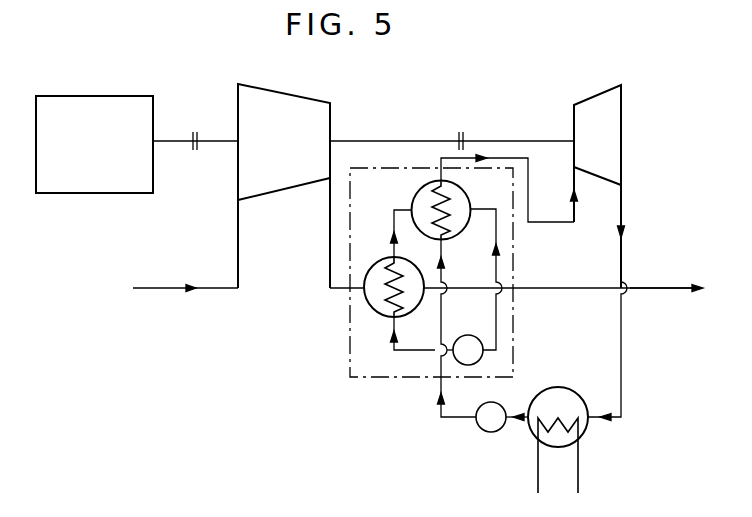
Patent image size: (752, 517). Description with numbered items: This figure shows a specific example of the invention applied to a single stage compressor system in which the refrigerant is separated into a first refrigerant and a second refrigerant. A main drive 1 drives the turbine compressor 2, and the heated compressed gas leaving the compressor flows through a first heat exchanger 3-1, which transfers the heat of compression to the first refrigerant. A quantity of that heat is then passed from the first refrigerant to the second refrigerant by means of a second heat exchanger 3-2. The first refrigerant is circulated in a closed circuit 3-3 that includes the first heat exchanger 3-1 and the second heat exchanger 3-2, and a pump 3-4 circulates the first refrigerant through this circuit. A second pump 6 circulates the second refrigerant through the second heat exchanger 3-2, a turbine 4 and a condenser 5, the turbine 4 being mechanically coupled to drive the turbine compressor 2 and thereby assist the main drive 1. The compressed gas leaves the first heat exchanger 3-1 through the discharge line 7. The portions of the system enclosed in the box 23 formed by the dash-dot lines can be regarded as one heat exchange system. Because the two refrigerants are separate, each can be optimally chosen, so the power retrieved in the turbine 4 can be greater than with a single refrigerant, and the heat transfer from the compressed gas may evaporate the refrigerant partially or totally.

The main drive 1 is at (92, 185).
The turbine compressor 2 is at (284, 189).
The first heat exchanger 3-1 is at (370, 298).
The second heat exchanger 3-2 is at (418, 203).
The closed circuit 3-3 is at (498, 318).
The pump 3-4 is at (483, 362).
The turbine 4 is at (613, 144).
The condenser 5 is at (583, 437).
The second pump 6 is at (489, 432).
The outlet line 7 is at (661, 287).
The box 23 is at (350, 356).